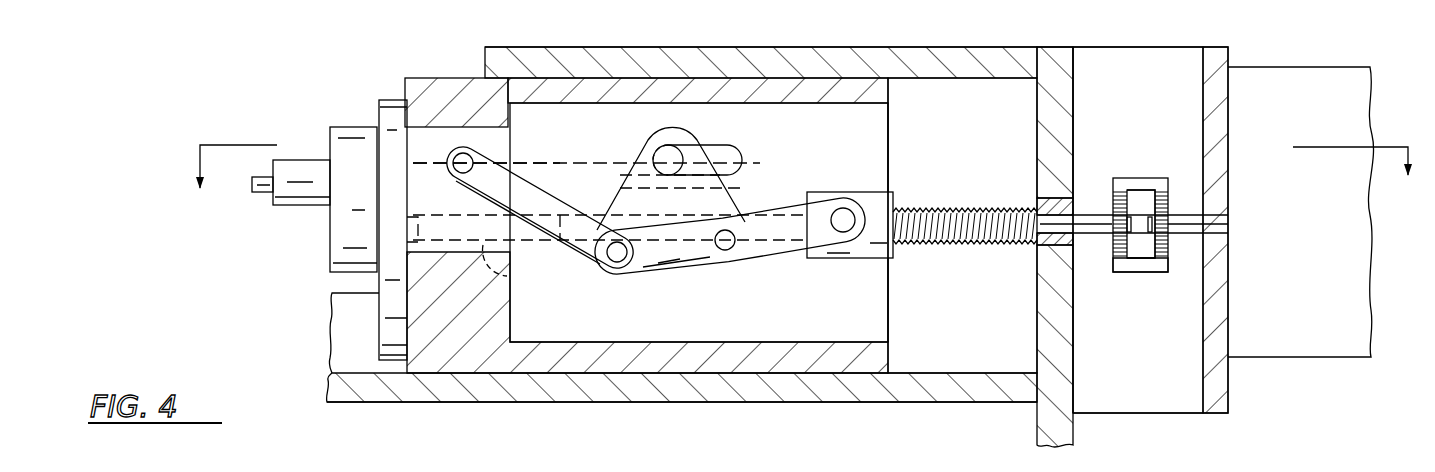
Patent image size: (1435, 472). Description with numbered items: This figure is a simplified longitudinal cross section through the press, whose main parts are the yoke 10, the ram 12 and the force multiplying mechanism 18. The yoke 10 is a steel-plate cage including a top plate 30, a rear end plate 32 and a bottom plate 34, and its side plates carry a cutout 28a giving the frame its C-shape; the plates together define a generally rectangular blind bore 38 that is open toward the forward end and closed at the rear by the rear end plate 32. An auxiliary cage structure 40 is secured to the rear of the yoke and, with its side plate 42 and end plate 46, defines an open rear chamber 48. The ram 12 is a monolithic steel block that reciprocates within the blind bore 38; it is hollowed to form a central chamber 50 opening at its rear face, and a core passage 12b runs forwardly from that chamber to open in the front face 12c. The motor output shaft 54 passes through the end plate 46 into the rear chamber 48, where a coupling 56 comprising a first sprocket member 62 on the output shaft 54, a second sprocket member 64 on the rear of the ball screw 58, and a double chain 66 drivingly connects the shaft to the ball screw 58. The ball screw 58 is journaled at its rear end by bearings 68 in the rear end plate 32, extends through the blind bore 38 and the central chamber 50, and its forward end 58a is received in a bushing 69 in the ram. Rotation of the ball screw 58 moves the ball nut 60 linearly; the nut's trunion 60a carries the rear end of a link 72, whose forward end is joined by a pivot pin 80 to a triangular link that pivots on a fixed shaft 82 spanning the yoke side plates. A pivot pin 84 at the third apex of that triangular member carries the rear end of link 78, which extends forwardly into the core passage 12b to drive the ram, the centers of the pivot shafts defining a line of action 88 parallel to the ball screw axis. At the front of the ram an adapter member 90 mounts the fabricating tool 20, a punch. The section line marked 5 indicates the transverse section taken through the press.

The section line 5- 5 is at (802, 184).
The yoke 10 is at (728, 45).
The ram 12 is at (450, 75).
The core passage 12b is at (420, 136).
The front face 12c is at (380, 307).
The force multiplying mechanism 18 is at (611, 168).
The fabricating tool 20 is at (263, 192).
The cutout 28a is at (332, 293).
The top plate 30 is at (610, 47).
The rear end plate 32 is at (1054, 44).
The bottom plate 34 is at (603, 403).
The blind bore 38 is at (938, 125).
The auxiliary cage structure 40 is at (1155, 39).
The side plate 42 is at (1157, 394).
The end plate 46 is at (1222, 415).
The rear chamber 48 is at (1125, 89).
The central chamber 50 is at (772, 125).
The output shaft 54 is at (1190, 235).
The coupling 56 is at (1146, 176).
The ball screw 58 is at (974, 209).
The forward end 58a is at (607, 208).
The ball nut 60 is at (866, 189).
The trunion 60a is at (850, 232).
The first sprocket member 62 is at (1170, 190).
The second sprocket member 64 is at (1112, 197).
The double chain 66 is at (1142, 272).
The bearings 68 is at (1056, 256).
The bushing 69 is at (500, 277).
The link 72 is at (785, 244).
The link 78 is at (543, 193).
The pivot pin 80 is at (725, 250).
The fixed shaft 82 is at (674, 152).
The pivot pin 84 is at (618, 262).
The line of action 88 is at (543, 163).
The adapter member 90 is at (353, 127).